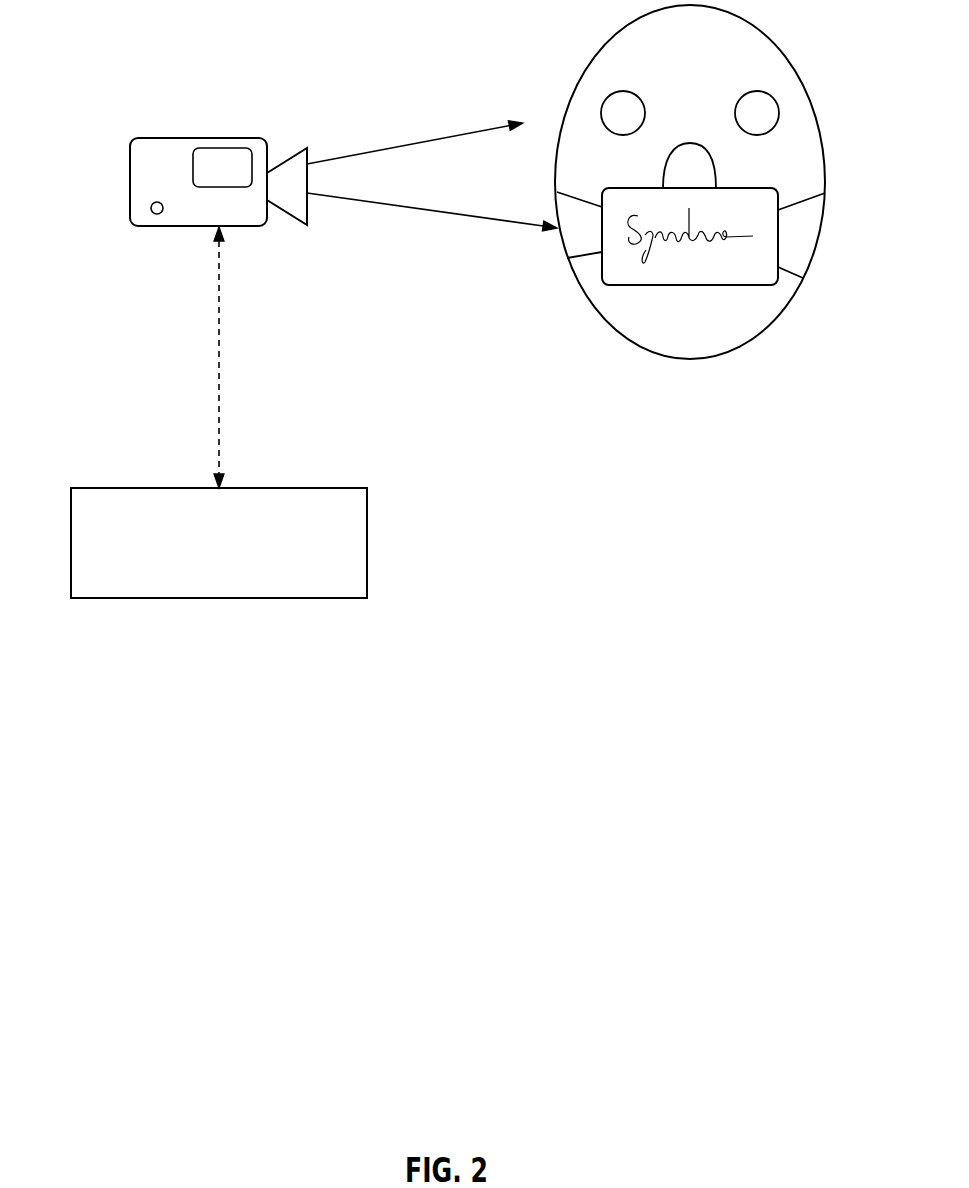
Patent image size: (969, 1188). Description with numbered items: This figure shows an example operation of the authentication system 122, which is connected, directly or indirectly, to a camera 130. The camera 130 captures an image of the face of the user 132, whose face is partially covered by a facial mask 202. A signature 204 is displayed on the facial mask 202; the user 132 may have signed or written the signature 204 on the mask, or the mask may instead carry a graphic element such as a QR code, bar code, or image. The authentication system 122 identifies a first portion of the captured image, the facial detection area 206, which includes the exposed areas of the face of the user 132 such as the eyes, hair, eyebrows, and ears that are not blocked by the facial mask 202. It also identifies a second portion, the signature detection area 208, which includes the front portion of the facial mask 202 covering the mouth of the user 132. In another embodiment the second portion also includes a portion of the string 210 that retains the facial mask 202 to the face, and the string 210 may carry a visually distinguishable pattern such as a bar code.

The authentication system 122 is at (367, 543).
The camera 130 is at (133, 150).
The user 132 is at (585, 92).
The facial mask 202 is at (778, 238).
The signature 204 is at (706, 263).
The facial detection area 206 is at (407, 143).
The signature detection area 208 is at (432, 214).
The string 210 is at (562, 264).